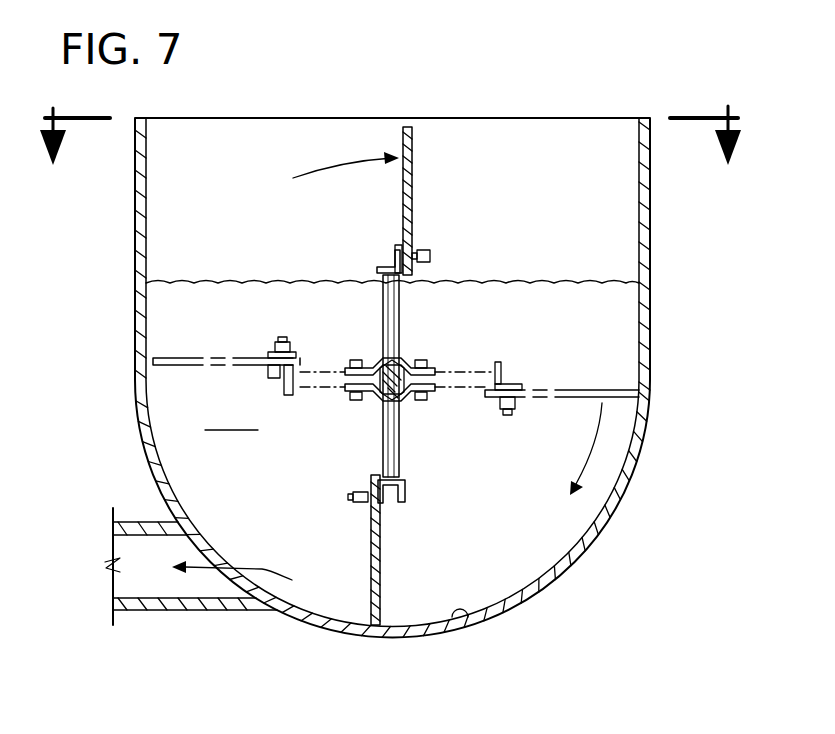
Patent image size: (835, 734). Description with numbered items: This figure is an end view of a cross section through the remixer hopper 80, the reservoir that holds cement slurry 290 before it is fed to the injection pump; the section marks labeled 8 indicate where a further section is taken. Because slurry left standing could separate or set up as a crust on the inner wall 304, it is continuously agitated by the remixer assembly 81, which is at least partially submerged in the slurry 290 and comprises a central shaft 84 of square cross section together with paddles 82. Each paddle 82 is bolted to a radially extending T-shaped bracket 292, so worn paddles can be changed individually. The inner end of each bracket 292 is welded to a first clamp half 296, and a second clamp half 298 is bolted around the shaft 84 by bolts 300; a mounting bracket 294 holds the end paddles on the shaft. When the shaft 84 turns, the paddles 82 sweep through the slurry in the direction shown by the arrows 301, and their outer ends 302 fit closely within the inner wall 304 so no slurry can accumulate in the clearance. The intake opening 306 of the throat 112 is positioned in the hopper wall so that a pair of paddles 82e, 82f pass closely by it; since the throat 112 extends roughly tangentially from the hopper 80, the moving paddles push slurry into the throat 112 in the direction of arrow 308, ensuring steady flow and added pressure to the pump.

The section line 8- 8 is at (390, 151).
The remixer hopper 80 is at (450, 394).
The remixer assembly 81 is at (220, 266).
The paddles 82 is at (180, 365).
The paddle 82e is at (412, 140).
The paddle 82f is at (381, 588).
The central shaft 84 is at (383, 403).
The throat 112 is at (172, 603).
The cement slurry 290 is at (231, 415).
The radially extending brackets 292 is at (386, 432).
The mounting bracket 294 is at (390, 262).
The first clamp half 296 is at (405, 400).
The second clamp half 298 is at (410, 345).
The bolts 300 is at (352, 345).
The arrows 301 is at (313, 170).
The outer ends of the paddles 302 is at (645, 392).
The inner wall 304 is at (470, 618).
The intake opening 306 is at (224, 538).
The arrow 308 is at (262, 568).